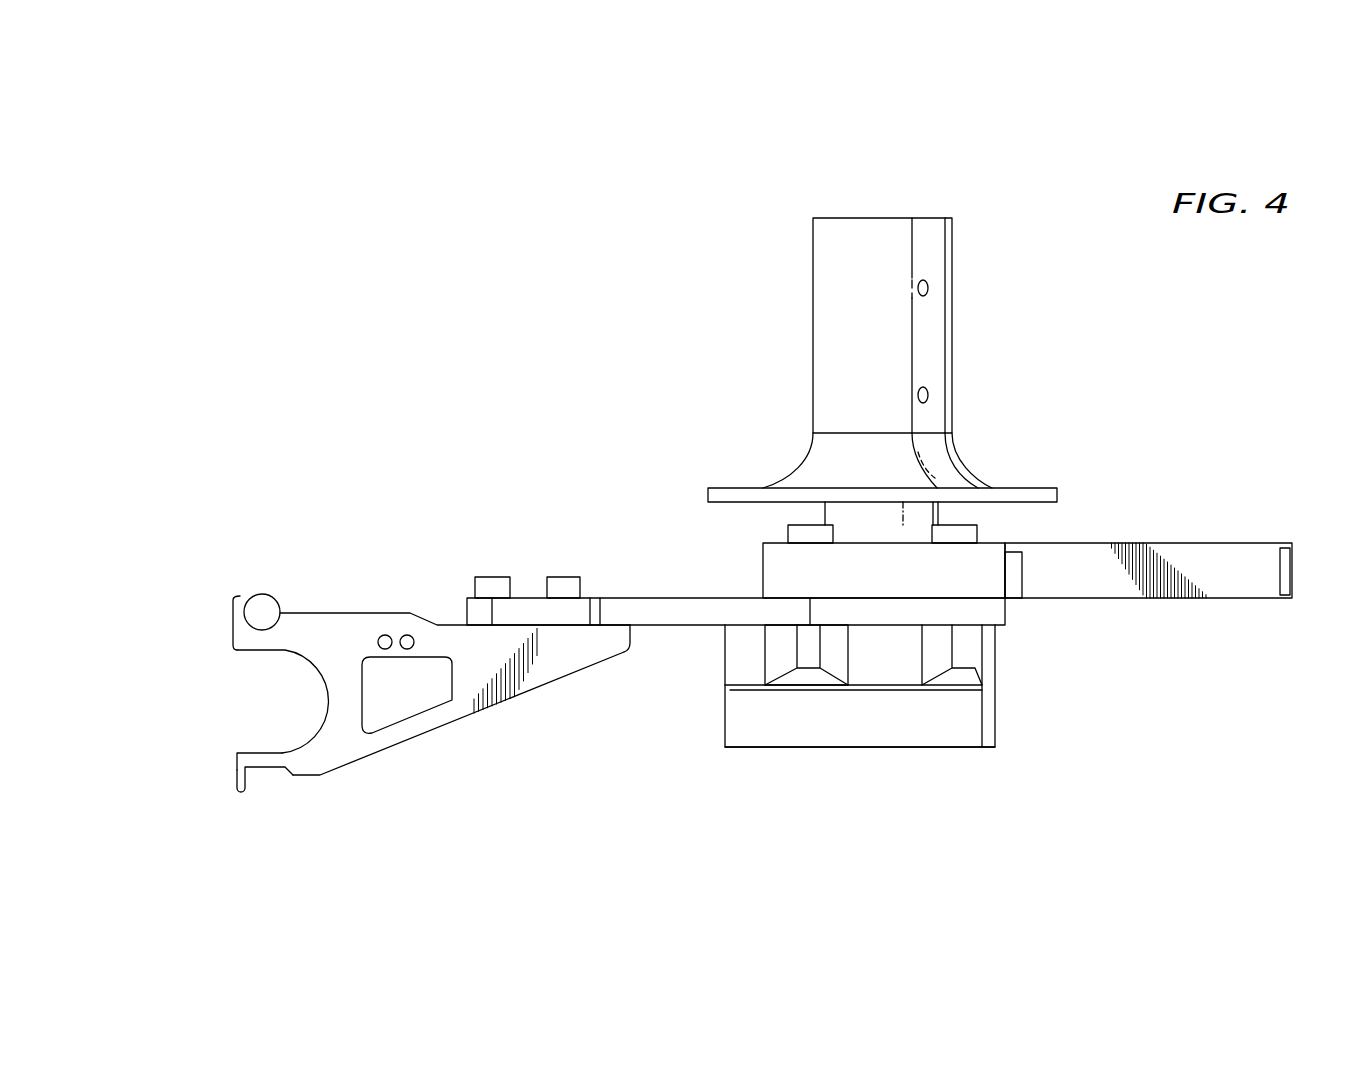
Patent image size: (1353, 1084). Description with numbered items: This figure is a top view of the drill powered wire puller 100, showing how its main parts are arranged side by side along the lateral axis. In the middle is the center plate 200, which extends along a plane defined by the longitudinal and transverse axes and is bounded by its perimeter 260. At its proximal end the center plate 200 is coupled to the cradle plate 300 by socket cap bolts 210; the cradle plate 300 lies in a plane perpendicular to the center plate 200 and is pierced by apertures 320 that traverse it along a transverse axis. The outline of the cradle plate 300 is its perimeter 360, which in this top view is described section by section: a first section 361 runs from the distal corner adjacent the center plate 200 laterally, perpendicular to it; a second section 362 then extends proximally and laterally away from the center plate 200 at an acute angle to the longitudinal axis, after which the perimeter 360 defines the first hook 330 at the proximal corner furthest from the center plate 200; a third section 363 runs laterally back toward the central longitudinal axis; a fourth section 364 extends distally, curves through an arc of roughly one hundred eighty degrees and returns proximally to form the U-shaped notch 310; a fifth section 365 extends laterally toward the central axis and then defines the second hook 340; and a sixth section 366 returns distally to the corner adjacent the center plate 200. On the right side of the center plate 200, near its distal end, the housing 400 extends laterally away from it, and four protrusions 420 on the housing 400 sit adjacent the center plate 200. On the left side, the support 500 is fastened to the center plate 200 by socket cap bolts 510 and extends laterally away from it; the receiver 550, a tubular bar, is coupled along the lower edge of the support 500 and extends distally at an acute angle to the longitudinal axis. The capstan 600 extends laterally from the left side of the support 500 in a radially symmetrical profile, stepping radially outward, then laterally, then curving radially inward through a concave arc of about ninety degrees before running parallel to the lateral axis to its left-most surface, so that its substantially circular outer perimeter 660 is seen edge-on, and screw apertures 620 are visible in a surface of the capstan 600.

The drill powered wire puller 100 is at (358, 251).
The center plate 200 is at (743, 613).
The socket cap bolts 210 is at (495, 585).
The perimeter 260 is at (645, 598).
The cradle plate 300 is at (467, 658).
The U-shaped notch 310 is at (222, 660).
The apertures 320 is at (372, 670).
The first hook or catch 330 is at (252, 777).
The second hook or catch 340 is at (248, 596).
The perimeter 360 is at (403, 742).
The first section 361 is at (633, 630).
The second section 362 is at (543, 687).
The third section 363 is at (233, 777).
The fourth section 364 is at (285, 652).
The fifth section 365 is at (233, 610).
The sixth section 366 is at (338, 613).
The housing 400 is at (905, 727).
The protrusions 420 is at (812, 652).
The support 500 is at (768, 558).
The socket cap bolts 510 is at (800, 530).
The receiver 550 is at (1187, 553).
The capstan 600 is at (855, 255).
The screw apertures 620 is at (927, 285).
The outer perimeter 660 is at (1050, 496).